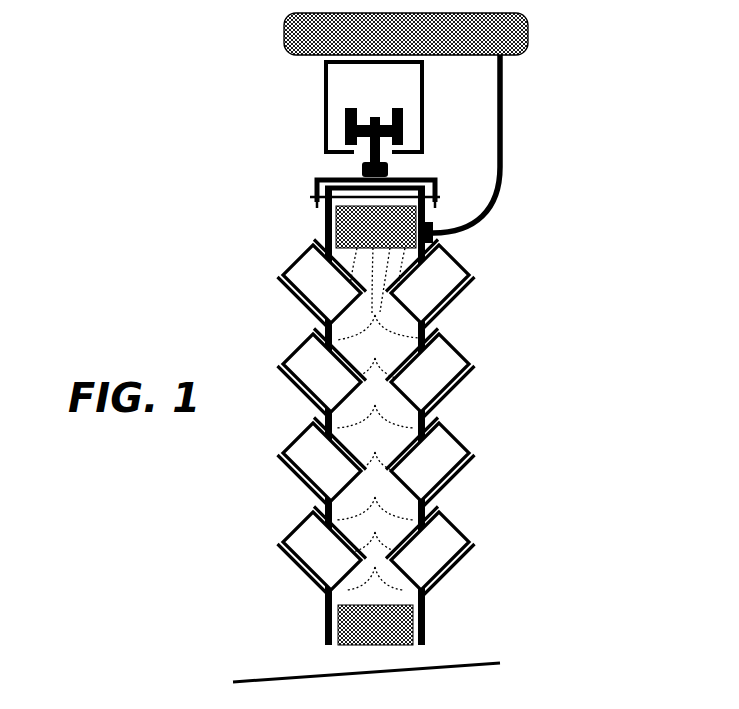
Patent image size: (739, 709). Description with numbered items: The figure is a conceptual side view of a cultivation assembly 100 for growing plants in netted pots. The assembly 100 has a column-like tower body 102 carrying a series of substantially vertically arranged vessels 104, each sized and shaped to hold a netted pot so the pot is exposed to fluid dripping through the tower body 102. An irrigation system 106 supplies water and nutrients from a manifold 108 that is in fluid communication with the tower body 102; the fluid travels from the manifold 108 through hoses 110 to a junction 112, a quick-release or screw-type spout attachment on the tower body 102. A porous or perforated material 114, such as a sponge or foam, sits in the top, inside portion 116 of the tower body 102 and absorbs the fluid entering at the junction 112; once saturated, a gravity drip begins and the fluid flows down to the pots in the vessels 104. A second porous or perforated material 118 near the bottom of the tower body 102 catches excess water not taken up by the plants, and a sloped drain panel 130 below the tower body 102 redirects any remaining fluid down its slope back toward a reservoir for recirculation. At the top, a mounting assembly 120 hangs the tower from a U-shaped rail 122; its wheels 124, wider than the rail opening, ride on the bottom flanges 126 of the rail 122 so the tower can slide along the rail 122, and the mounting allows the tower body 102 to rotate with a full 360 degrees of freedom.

The cultivation assembly 100 is at (178, 134).
The tower body 102 is at (425, 633).
The vessels 104 is at (443, 445).
The irrigation system 106 is at (538, 157).
The manifold 108 is at (527, 45).
The hoses 110 is at (502, 118).
The junction 112 is at (434, 236).
The porous or perforated material 114 is at (337, 233).
The top, inside portion 116 is at (305, 148).
The second porous or perforated material 118 is at (330, 630).
The mounting assembly 120 is at (364, 104).
The rail 122 is at (326, 88).
The wheels 124 is at (404, 110).
The bottom flanges 126 is at (412, 150).
The sloped drain panel 130 is at (500, 663).
The rotation angle 360 is at (362, 168).